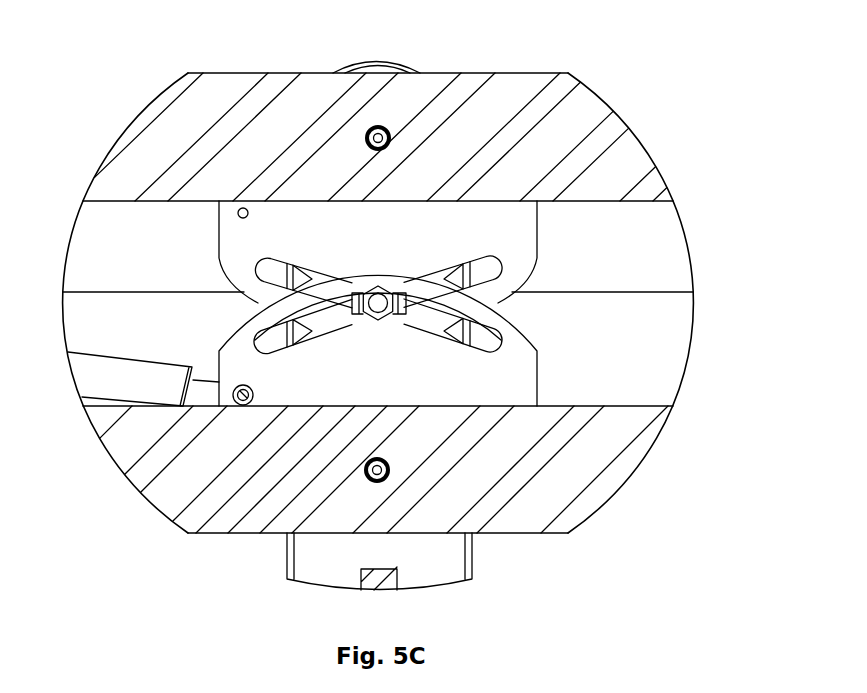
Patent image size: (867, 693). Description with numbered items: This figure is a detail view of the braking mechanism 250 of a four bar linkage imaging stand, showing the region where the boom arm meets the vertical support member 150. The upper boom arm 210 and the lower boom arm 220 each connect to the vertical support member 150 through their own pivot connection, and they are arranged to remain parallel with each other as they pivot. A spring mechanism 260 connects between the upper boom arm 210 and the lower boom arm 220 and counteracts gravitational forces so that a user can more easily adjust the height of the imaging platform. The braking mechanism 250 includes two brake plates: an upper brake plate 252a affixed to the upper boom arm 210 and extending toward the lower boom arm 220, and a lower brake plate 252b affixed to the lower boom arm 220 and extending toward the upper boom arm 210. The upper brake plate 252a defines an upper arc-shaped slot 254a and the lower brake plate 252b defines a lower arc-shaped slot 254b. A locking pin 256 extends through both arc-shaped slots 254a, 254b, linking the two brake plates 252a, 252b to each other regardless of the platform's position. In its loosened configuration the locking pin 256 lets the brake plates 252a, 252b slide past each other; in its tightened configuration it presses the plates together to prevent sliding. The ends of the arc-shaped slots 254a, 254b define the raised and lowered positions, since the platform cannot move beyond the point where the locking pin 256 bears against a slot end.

The upper boom arm 210 is at (502, 90).
The lower boom arm 220 is at (530, 508).
The vertical support member 150 is at (303, 557).
The braking mechanism 250 is at (411, 284).
The upper brake plate 252a is at (235, 237).
The lower brake plate 252b is at (522, 373).
The upper arc-shaped slot 254a is at (255, 262).
The lower arc-shaped slot 254b is at (505, 338).
The locking pin 256 is at (382, 297).
The spring mechanism 260 is at (92, 373).